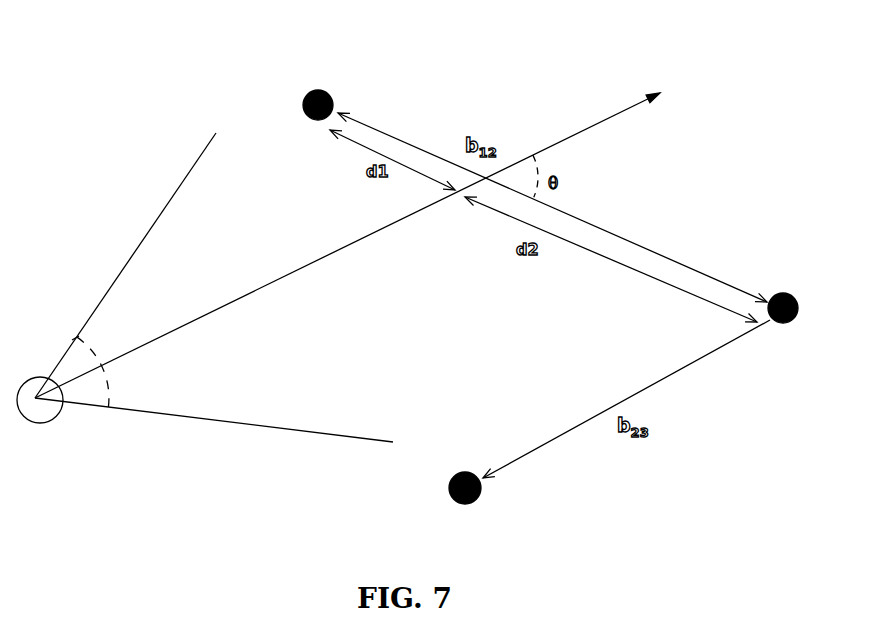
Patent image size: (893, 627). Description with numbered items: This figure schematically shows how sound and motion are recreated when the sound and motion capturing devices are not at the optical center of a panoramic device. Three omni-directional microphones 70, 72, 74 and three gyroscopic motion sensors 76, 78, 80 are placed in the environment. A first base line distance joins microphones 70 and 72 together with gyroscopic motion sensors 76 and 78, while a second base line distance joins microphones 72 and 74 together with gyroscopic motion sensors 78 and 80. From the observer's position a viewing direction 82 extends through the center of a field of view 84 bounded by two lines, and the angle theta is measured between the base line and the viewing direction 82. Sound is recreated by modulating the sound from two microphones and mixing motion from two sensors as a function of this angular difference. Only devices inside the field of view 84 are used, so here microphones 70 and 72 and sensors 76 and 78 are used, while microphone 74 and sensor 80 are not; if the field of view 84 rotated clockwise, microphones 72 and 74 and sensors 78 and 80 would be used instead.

The omni-directional microphone 70 is at (304, 96).
The omni-directional microphone 72 is at (800, 308).
The omni-directional microphone 74 is at (456, 502).
The gyroscopic motion sensor 76 is at (457, 52).
The gyroscopic motion sensor 78 is at (793, 225).
The gyroscopic motion sensor 80 is at (585, 538).
The viewing direction 82 is at (239, 297).
The field of view 84 is at (117, 387).